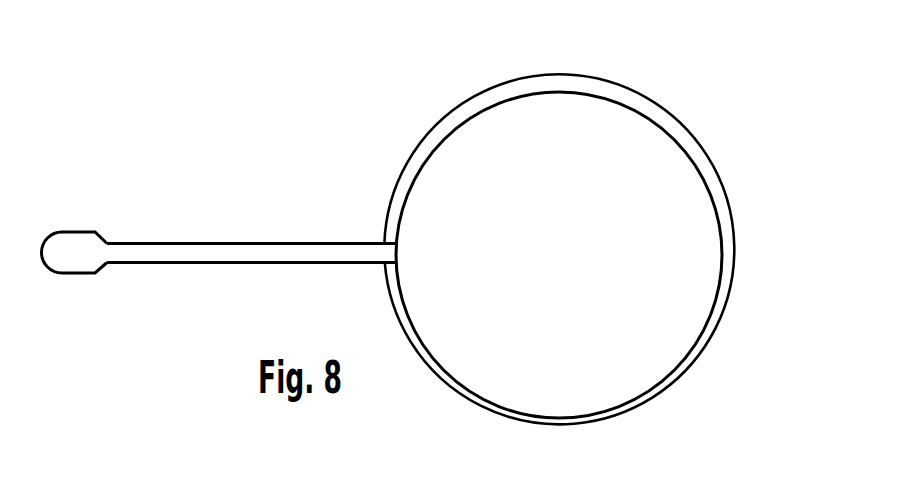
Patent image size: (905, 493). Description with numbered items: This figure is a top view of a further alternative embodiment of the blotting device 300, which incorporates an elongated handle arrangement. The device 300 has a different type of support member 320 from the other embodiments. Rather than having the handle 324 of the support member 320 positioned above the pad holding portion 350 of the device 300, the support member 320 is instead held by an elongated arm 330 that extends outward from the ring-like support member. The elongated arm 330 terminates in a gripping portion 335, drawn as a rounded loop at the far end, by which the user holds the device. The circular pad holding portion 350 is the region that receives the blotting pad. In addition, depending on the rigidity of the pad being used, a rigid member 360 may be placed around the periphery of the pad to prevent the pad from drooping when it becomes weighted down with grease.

The blotting device 300 is at (677, 91).
The support member 320 is at (400, 175).
The handle 324 is at (225, 232).
The elongated arm 330 is at (268, 265).
The gripping portion 335 is at (72, 260).
The pad holding portion 350 is at (642, 183).
The rigid member 360 is at (715, 327).